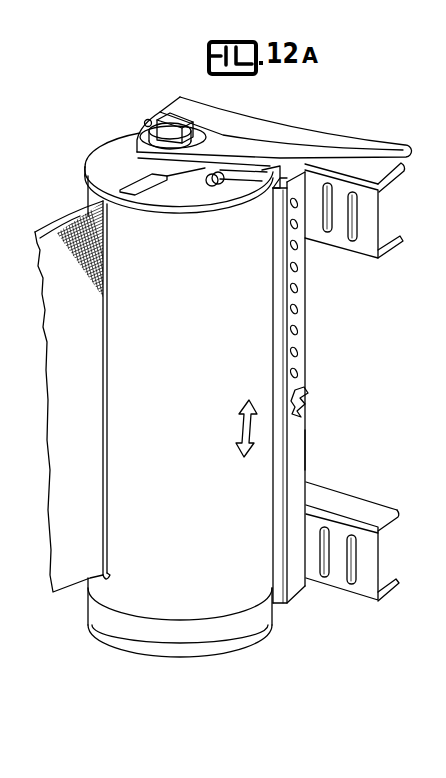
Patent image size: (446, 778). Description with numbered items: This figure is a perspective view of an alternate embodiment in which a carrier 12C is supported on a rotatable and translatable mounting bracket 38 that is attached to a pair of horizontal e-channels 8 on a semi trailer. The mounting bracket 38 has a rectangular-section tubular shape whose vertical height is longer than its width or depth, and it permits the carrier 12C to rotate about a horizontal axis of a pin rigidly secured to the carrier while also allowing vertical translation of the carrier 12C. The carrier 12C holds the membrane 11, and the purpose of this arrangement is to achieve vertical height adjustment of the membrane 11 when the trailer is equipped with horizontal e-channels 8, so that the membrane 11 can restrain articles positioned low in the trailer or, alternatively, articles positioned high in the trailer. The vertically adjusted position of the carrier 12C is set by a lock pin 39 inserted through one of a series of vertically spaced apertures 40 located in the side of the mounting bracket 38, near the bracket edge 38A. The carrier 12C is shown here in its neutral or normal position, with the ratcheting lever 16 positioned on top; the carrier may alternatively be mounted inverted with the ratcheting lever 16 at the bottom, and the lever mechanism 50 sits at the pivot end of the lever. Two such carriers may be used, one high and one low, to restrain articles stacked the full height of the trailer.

The horizontal e-channel 8 is at (382, 255).
The membrane 11 is at (58, 507).
The carrier 12C is at (85, 166).
The ratcheting lever 16 is at (367, 147).
The mounting bracket 38 is at (298, 428).
The upright support edge 38A is at (306, 442).
The lock pin 39 is at (303, 390).
The apertures 40 is at (297, 332).
The latch mechanism 50 is at (318, 137).